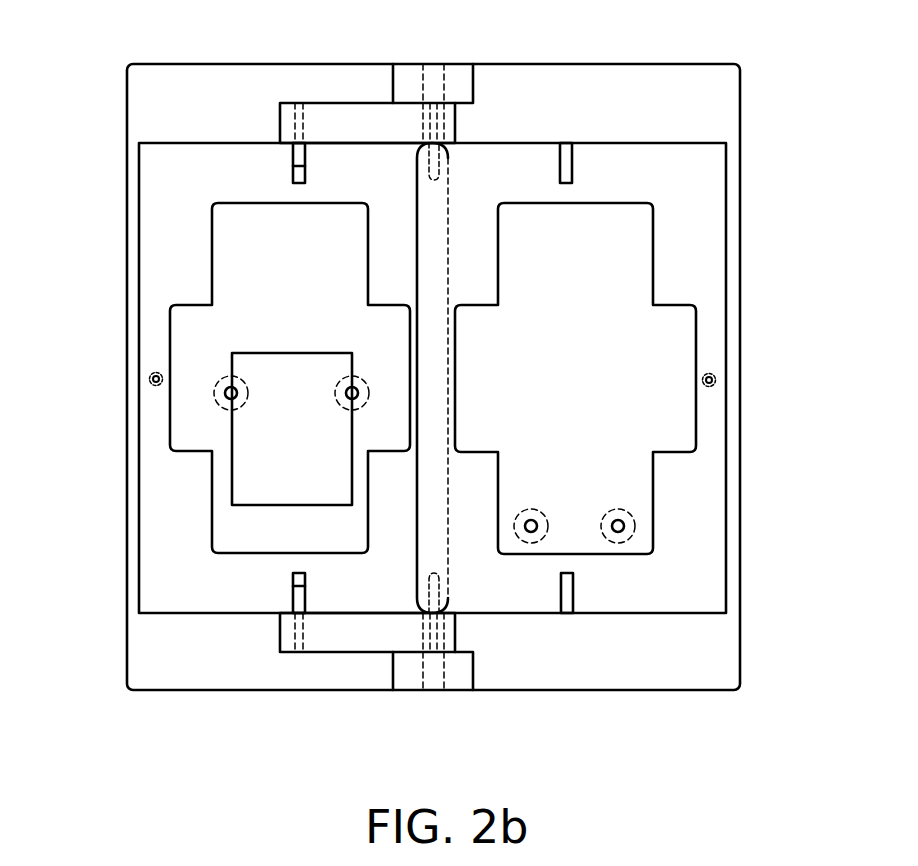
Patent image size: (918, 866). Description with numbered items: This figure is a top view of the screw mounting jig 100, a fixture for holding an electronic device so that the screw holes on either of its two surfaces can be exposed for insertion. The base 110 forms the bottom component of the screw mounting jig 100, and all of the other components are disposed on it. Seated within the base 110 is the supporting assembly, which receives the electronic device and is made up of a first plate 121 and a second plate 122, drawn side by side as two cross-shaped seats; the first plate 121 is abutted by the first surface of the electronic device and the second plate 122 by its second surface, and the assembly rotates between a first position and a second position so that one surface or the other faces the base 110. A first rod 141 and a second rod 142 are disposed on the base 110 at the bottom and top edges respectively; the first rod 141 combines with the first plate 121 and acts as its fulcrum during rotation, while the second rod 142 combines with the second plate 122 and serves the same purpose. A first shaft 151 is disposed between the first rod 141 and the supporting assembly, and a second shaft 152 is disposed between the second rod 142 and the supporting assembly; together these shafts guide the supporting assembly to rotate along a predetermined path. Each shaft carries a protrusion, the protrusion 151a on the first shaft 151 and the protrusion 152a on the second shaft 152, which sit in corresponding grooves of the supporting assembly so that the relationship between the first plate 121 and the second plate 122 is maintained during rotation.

The screw mounting jig 100 is at (84, 38).
The base 110 is at (698, 105).
The first plate 121 is at (157, 228).
The second plate 122 is at (620, 340).
The first rod 141 is at (435, 672).
The second rod 142 is at (436, 86).
The first shaft 151 is at (347, 633).
The protrusion 151a is at (297, 600).
The second shaft 152 is at (352, 125).
The protrusion 152a is at (295, 157).